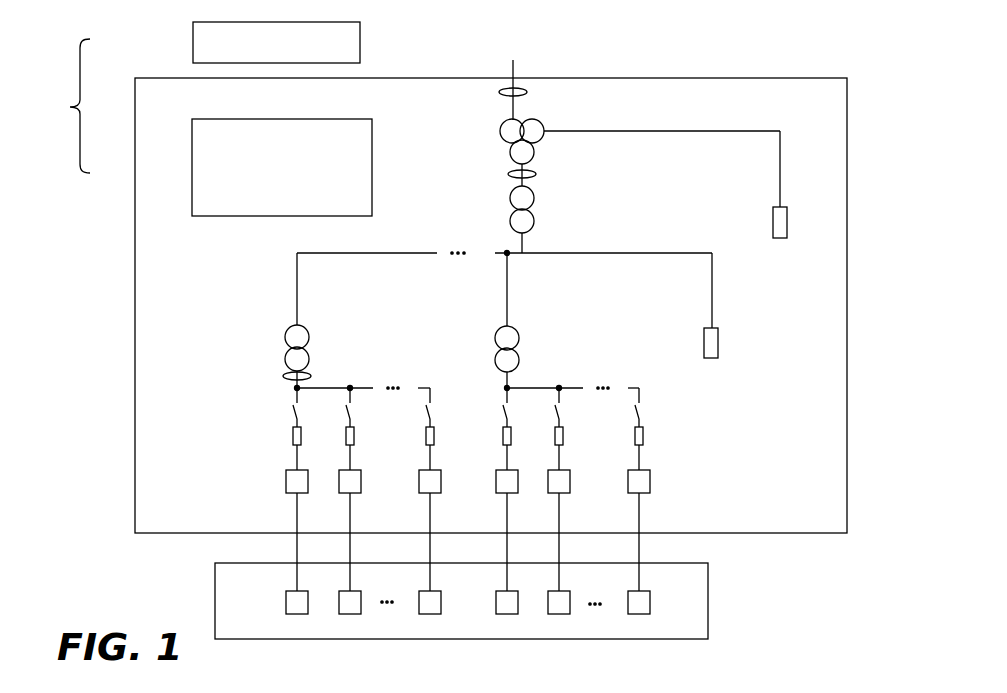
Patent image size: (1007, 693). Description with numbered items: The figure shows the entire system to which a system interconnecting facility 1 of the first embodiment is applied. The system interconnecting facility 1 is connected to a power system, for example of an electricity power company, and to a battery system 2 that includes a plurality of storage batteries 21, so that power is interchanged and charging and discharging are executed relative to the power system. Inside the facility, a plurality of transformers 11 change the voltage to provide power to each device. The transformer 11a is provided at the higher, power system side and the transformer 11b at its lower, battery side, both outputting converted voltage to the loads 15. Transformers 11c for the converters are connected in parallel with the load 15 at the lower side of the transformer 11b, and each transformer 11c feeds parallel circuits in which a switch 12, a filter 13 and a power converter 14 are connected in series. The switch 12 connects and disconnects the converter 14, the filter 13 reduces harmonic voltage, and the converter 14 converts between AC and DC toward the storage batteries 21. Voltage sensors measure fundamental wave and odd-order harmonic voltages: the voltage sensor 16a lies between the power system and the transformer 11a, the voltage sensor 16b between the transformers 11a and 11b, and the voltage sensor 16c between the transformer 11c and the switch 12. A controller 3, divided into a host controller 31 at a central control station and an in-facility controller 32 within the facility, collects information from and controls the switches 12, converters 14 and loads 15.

The system interconnecting facility 1 is at (648, 78).
The battery system 2 is at (215, 602).
The controller 3 is at (70, 106).
The host controller 31 is at (193, 43).
The in-facility controller 32 is at (192, 167).
The transformer 11 is at (470, 238).
The transformer 11a is at (538, 122).
The transformer 11b is at (534, 202).
The transformer for converter 11c is at (310, 358).
The switch 12 is at (294, 405).
The filter 13 is at (293, 434).
The power converter 14 is at (286, 484).
The load 15 is at (788, 225).
The voltage sensor 16a is at (498, 92).
The voltage sensor 16b is at (508, 174).
The voltage sensor 16c is at (285, 374).
The storage battery 21 is at (297, 614).